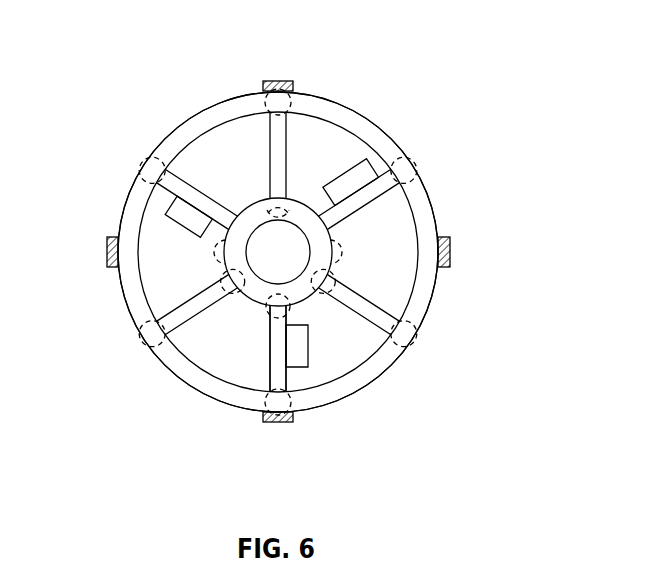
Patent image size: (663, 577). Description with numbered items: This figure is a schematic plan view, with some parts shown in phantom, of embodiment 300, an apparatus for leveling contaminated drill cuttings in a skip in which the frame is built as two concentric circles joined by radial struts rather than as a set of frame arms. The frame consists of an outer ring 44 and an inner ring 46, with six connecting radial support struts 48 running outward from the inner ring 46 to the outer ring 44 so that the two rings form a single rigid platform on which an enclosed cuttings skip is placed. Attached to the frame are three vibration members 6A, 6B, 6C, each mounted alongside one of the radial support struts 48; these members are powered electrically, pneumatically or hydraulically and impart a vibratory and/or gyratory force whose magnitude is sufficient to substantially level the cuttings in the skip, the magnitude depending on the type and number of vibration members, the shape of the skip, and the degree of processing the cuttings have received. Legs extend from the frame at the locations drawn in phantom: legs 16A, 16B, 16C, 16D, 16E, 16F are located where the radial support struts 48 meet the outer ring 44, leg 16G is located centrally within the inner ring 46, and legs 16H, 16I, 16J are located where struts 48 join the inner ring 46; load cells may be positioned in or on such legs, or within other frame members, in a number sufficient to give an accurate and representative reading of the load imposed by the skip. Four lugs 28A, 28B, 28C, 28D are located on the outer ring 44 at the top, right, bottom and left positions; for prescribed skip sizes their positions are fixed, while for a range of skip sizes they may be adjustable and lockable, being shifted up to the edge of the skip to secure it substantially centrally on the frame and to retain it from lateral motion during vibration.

The embodiment 300 is at (438, 43).
The outer ring 44 is at (434, 208).
The inner ring 46 is at (303, 290).
The connecting radial support struts 48 is at (269, 128).
The vibration member 6A is at (166, 214).
The vibration member 6B is at (364, 158).
The vibration member 6C is at (310, 347).
The leg 16A is at (312, 95).
The leg 16B is at (421, 160).
The leg 16C is at (408, 348).
The leg 16D is at (260, 416).
The leg 16E is at (144, 337).
The leg 16F is at (138, 158).
The leg 16G is at (278, 222).
The leg 16H is at (338, 277).
The leg 16I is at (260, 318).
The leg 16J is at (220, 276).
The lug 28A is at (278, 80).
The lug 28B is at (452, 252).
The lug 28C is at (284, 424).
The lug 28D is at (106, 252).